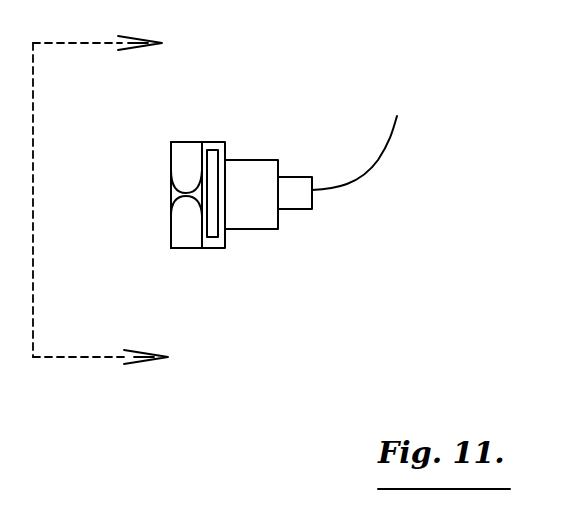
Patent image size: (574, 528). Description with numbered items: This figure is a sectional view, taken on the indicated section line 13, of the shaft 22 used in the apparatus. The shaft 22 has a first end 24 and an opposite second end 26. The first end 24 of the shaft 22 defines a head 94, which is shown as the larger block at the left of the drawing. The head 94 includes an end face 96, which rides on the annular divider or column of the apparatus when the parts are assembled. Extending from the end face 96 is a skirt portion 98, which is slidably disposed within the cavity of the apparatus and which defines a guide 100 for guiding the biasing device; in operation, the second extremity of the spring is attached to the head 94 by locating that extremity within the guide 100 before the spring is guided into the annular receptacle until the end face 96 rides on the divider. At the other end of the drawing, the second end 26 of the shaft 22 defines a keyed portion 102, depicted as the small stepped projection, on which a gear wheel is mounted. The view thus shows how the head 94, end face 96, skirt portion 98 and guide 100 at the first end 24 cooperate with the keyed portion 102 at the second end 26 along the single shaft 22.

The section line 13- 13 is at (129, 203).
The shaft 22 is at (253, 237).
The first end 24 is at (171, 176).
The second end 26 is at (362, 141).
The head 94 is at (186, 241).
The end face 96 is at (185, 192).
The skirt portion 98 is at (190, 142).
The guide 100 is at (186, 192).
The keyed portion 102 is at (296, 204).